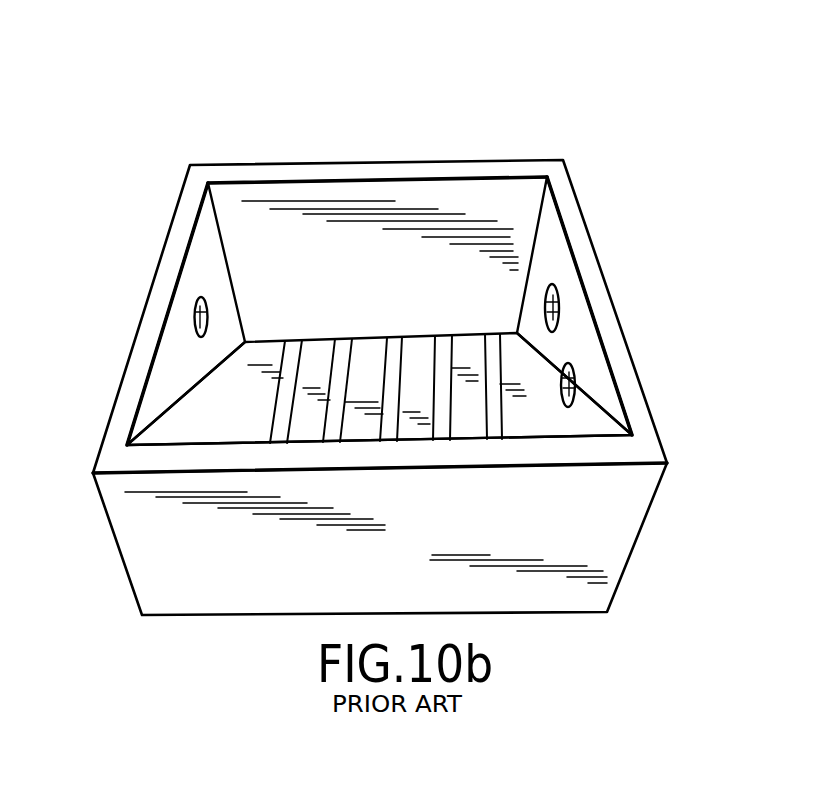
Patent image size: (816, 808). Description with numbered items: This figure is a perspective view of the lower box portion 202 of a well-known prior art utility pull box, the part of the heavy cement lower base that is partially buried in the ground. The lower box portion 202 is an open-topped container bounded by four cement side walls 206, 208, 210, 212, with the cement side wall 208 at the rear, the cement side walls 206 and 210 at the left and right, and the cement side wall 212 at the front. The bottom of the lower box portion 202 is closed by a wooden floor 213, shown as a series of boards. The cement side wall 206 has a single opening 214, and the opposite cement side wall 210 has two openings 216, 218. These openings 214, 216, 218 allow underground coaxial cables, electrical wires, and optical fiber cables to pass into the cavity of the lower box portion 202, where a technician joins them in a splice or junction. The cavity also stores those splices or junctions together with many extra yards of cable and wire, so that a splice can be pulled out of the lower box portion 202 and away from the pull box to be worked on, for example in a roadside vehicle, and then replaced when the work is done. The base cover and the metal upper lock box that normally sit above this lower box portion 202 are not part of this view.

The lower box portion 202 is at (172, 197).
The cement side wall 206 is at (143, 342).
The cement side wall 208 is at (427, 162).
The cement side wall 210 is at (581, 222).
The cement side wall 212 is at (137, 559).
The wooden floor 213 is at (392, 345).
The opening 214 is at (195, 313).
The opening 216 is at (556, 302).
The opening 218 is at (572, 379).